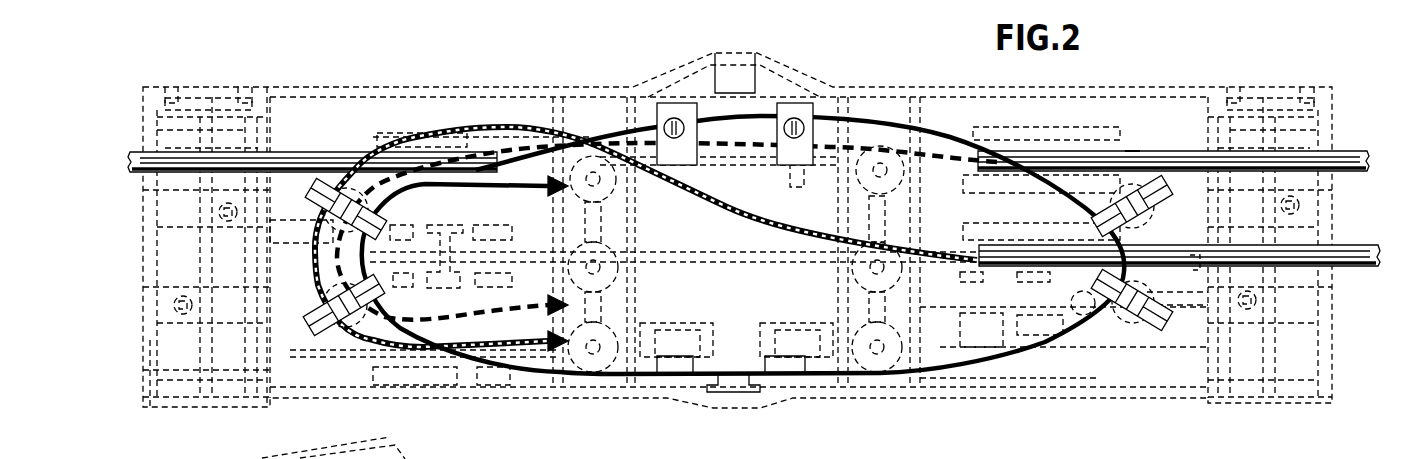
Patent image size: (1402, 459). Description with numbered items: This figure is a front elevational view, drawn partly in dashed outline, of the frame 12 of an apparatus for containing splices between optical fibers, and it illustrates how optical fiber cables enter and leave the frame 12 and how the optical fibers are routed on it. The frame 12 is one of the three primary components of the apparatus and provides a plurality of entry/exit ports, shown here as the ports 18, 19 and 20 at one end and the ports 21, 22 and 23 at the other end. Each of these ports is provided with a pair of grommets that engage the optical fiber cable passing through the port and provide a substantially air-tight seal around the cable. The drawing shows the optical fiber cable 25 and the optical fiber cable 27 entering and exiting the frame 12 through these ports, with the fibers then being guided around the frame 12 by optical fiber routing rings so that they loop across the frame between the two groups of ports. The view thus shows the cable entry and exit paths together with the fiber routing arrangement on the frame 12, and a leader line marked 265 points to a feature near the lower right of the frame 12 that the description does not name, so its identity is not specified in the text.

The frame 12 is at (900, 86).
The entry/exit port 18 is at (1342, 132).
The entry/exit port 19 is at (1345, 228).
The entry/exit port 20 is at (1340, 343).
The entry/exit port 21 is at (128, 138).
The entry/exit port 22 is at (132, 272).
The entry/exit port 23 is at (132, 376).
The optical fiber cable 25 is at (1133, 150).
The optical fiber cable 27 is at (338, 163).
The guide plate 265 is at (1200, 262).